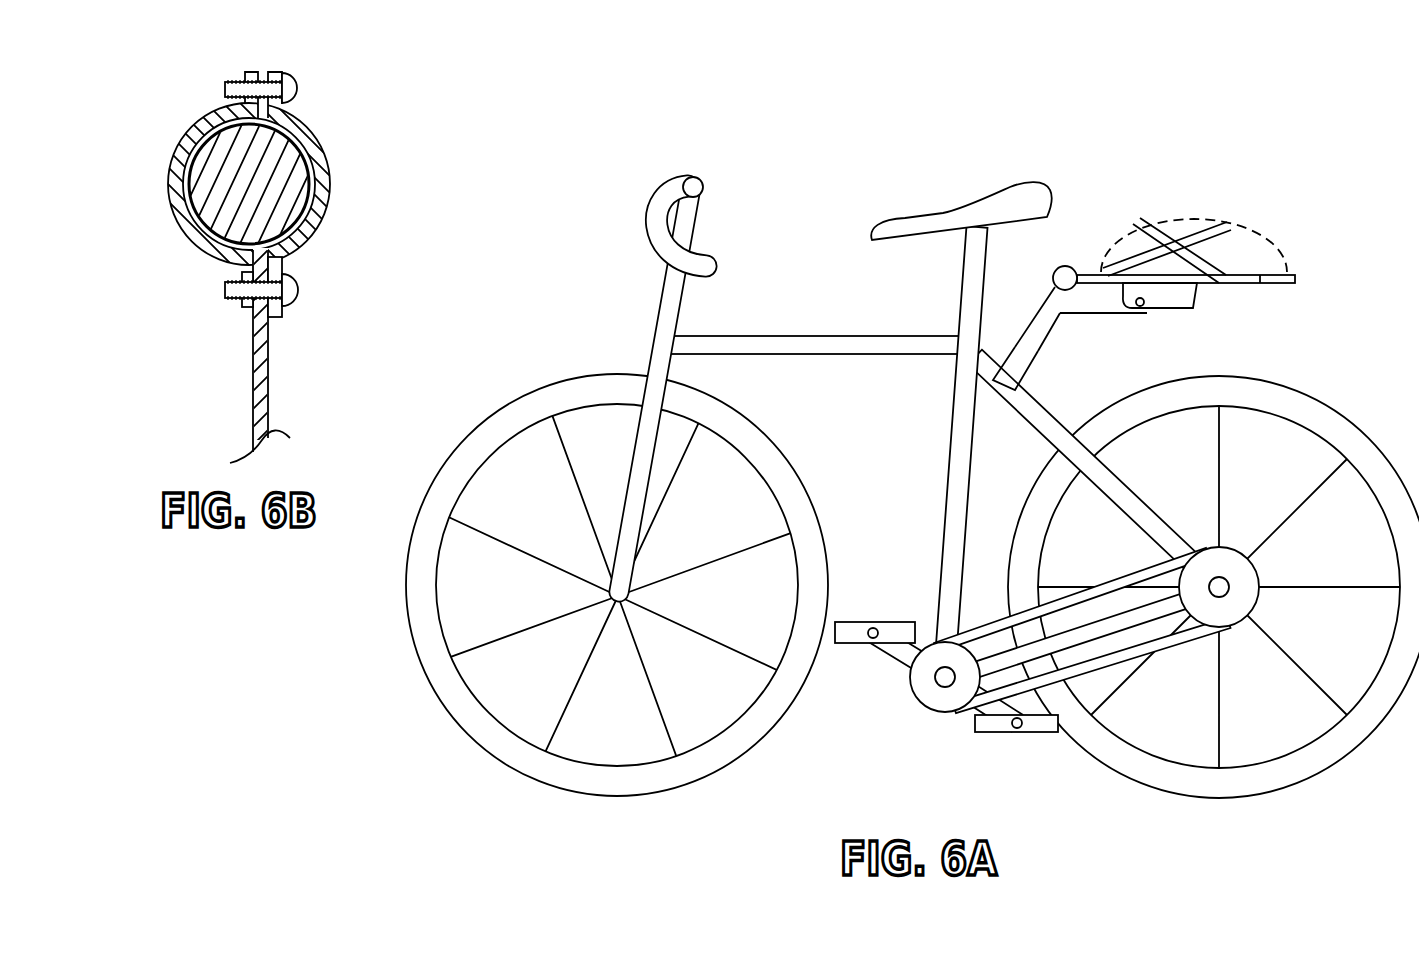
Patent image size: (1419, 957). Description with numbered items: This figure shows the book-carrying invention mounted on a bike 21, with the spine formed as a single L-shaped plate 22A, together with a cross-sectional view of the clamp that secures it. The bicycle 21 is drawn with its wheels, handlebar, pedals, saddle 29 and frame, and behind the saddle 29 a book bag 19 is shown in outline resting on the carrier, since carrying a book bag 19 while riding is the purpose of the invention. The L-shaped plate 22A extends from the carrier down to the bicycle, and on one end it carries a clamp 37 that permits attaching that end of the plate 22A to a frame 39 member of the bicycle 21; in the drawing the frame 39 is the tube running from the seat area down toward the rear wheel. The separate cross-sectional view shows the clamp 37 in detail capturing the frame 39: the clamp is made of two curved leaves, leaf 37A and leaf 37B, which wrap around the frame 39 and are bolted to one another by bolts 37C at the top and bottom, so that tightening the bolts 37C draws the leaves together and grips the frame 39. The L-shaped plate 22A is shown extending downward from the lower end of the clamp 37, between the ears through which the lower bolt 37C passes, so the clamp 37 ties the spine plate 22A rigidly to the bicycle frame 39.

In FIG. 6A, the book bag 19 is at (1184, 238).
In FIG. 6A, the bike 21 is at (1213, 587).
In FIG. 6B, the L-shaped plate 22A is at (268, 368).
In FIG. 6A, the L-shaped plate 22A is at (1023, 350).
In FIG. 6A, the saddle 29 is at (965, 248).
In FIG. 6B, the clamp 37 is at (203, 265).
In FIG. 6A, the clamp 37 is at (1005, 388).
In FIG. 6B, the leaf 37A is at (330, 214).
In FIG. 6B, the leaf 37B is at (173, 213).
In FIG. 6B, the bolts 37C is at (297, 86).
In FIG. 6B, the frame 39 is at (282, 176).
In FIG. 6A, the frame 39 is at (1113, 492).